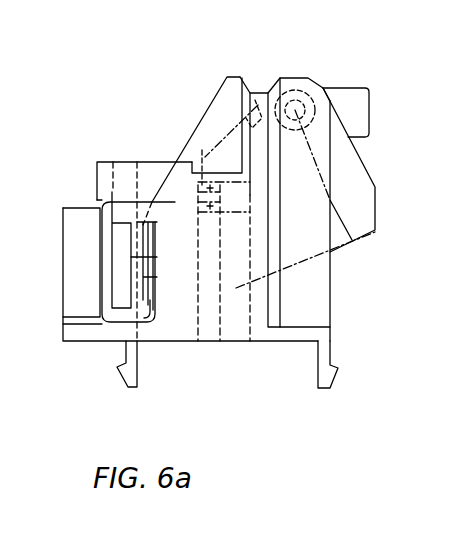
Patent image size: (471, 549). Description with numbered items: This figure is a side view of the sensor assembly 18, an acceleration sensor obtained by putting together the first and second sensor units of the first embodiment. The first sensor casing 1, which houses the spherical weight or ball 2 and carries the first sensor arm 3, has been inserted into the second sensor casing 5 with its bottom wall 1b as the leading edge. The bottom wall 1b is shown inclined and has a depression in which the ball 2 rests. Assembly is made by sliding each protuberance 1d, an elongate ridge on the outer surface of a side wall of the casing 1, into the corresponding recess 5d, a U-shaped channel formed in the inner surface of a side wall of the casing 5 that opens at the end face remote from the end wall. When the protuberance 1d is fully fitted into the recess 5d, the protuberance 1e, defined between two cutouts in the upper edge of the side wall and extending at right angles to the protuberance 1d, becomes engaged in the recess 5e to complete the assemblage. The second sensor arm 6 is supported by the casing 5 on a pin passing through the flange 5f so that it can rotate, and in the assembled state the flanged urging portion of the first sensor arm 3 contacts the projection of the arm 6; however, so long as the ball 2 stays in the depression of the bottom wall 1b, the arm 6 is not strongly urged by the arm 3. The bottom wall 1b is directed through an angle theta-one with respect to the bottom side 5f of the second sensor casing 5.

The first sensor casing 1 is at (255, 209).
The bottom wall 1b is at (331, 199).
The protuberance 1d is at (372, 349).
The protuberance 1e is at (191, 151).
The spherical weight or ball 2 is at (226, 355).
The first sensor arm 3 is at (343, 80).
The second sensor casing 5 is at (270, 400).
The recess 5d is at (259, 96).
The recess 5e is at (176, 396).
The flange / bottom side 5f is at (373, 170).
The second sensor arm 6 is at (70, 203).
The sensor assembly 18 is at (52, 320).